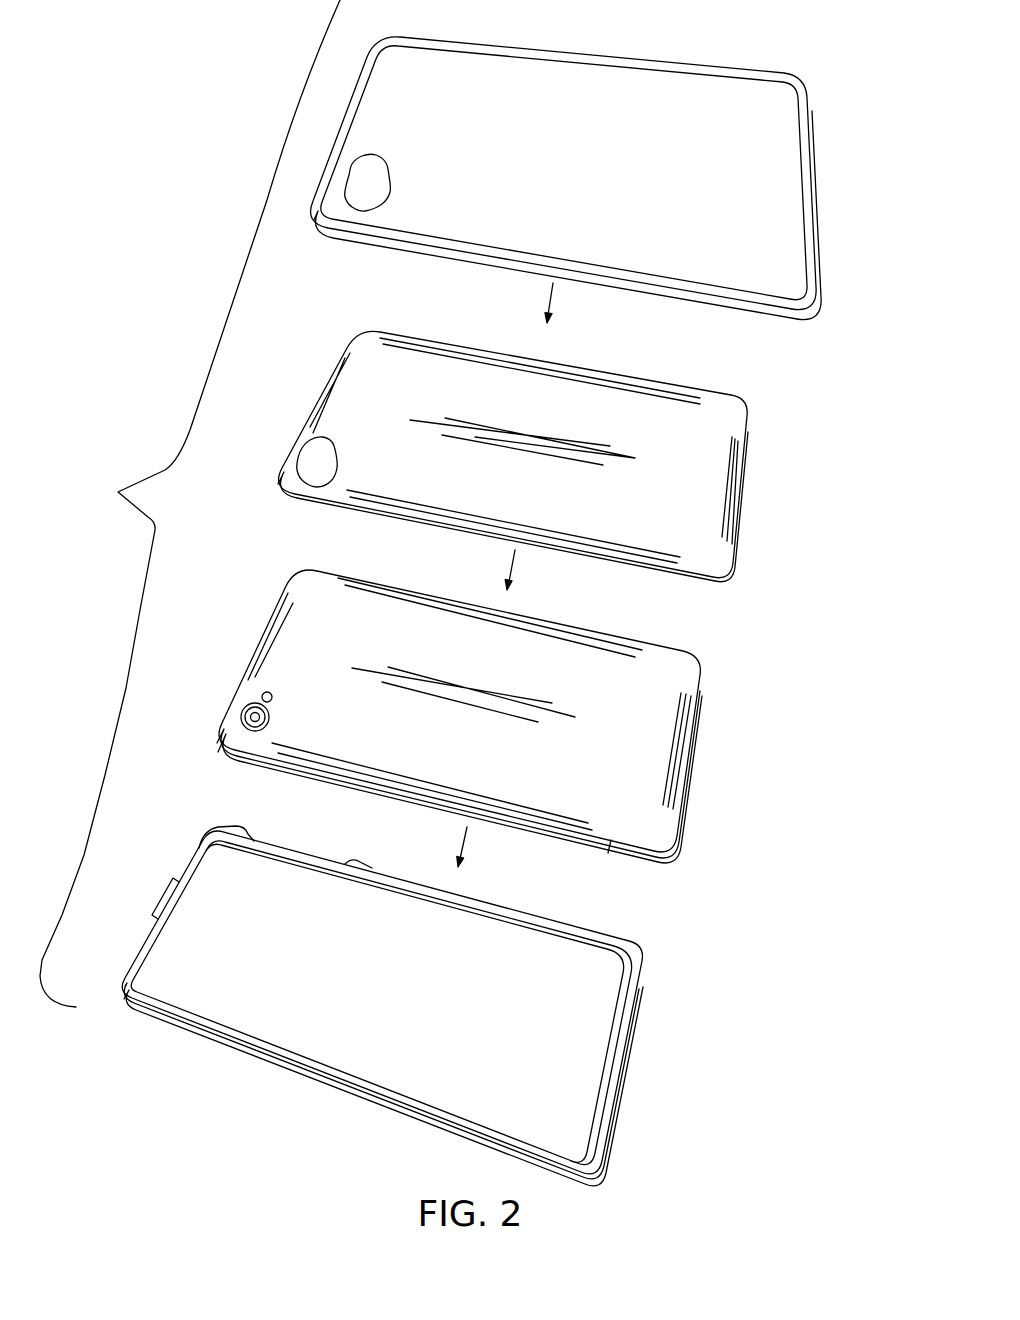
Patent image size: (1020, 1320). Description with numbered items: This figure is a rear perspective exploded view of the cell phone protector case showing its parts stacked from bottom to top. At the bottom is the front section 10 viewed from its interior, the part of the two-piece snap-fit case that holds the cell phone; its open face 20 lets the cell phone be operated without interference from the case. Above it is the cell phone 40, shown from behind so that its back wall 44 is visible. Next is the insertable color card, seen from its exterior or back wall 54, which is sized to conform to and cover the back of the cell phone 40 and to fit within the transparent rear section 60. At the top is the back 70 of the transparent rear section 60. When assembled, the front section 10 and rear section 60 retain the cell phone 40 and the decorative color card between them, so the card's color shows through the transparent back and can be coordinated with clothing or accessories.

The front section 10 is at (418, 1006).
The open face 20 is at (600, 998).
The cell phone 40 is at (503, 716).
The back wall 44 is at (652, 720).
The back wall 54 is at (718, 448).
The rear section 60 is at (566, 163).
The back 70 is at (538, 83).